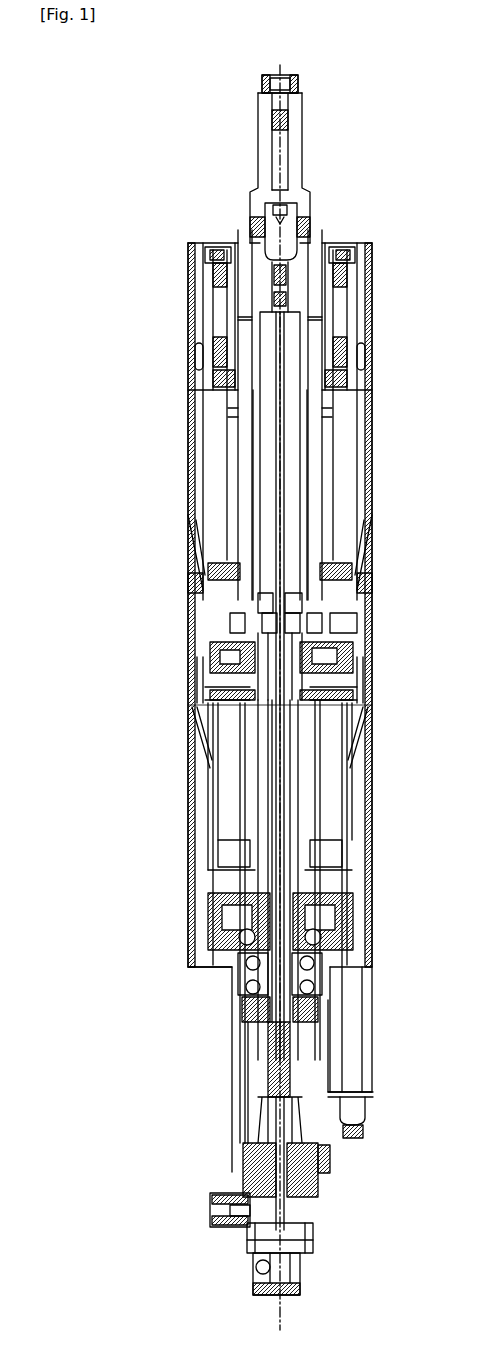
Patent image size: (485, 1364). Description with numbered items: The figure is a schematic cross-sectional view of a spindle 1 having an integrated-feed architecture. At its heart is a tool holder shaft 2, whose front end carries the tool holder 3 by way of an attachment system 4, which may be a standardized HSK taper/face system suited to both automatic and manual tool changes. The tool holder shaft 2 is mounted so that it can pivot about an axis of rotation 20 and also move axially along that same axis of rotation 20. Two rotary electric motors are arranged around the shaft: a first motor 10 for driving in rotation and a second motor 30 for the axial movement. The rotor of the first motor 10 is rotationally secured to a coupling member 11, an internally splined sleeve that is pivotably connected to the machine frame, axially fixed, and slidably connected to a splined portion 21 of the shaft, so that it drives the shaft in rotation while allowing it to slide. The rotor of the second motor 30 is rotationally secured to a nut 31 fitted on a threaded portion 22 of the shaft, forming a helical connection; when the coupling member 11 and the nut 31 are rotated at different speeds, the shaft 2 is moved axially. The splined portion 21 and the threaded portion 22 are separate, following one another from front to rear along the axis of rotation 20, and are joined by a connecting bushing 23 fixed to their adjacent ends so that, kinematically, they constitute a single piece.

The spindle 1 is at (116, 450).
The tool holder shaft 2 is at (250, 237).
The tool holder 3 is at (258, 165).
The attachment system 4 is at (290, 230).
The first motor 10 is at (213, 542).
The coupling member 11 is at (240, 435).
The axis of rotation 20 is at (282, 166).
The splined portion 21 is at (260, 492).
The threaded portion 22 is at (263, 760).
The connecting bushing 23 is at (247, 620).
The second motor 30 is at (227, 803).
The nut 31 is at (240, 855).